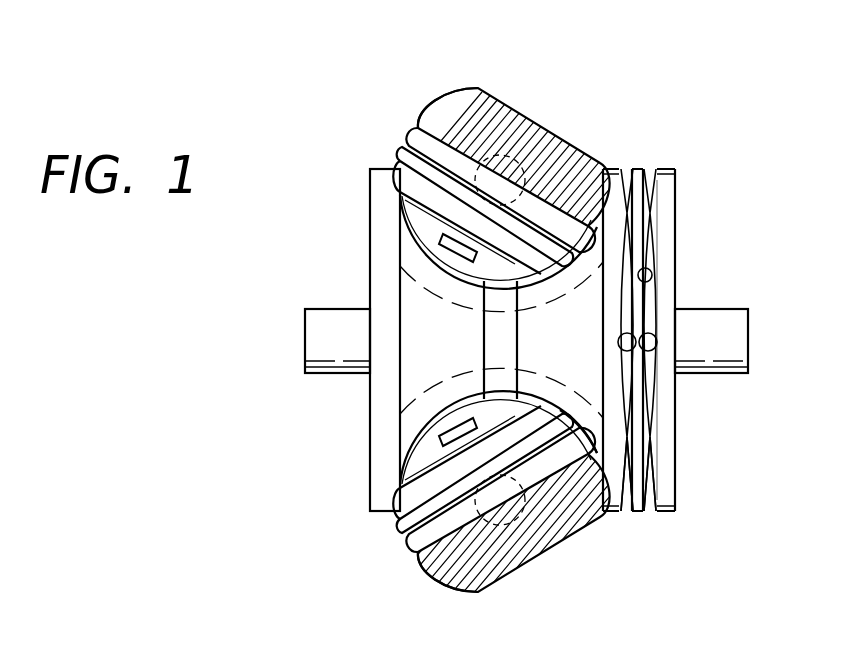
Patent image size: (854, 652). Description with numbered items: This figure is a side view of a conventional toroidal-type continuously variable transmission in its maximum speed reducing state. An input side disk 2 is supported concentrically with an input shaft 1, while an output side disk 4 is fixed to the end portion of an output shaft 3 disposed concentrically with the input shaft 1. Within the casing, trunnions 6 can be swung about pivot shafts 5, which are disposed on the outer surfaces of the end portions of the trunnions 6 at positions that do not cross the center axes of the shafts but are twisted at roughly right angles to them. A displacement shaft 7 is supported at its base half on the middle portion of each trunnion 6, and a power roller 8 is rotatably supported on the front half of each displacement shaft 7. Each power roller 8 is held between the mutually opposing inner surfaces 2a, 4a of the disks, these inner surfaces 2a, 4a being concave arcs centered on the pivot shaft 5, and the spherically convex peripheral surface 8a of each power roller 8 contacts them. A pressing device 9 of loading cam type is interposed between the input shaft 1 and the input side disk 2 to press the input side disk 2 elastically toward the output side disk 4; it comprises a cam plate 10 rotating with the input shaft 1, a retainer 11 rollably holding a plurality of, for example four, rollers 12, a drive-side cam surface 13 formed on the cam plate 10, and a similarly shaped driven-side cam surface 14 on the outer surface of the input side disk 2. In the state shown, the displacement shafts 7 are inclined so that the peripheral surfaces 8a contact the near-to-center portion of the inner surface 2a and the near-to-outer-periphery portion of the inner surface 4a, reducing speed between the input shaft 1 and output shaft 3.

The input shaft 1 is at (738, 350).
The input side disk 2 is at (620, 215).
The inner surface 2a is at (592, 508).
The output shaft 3 is at (305, 345).
The output side disk 4 is at (413, 254).
The inner surface 4a is at (437, 284).
The pivot shaft 5 is at (527, 112).
The trunnion 6 is at (473, 111).
The displacement shaft 7 is at (400, 188).
The power roller 8 is at (415, 131).
The peripheral surface 8a is at (432, 187).
The pressing device 9 is at (690, 332).
The cam plate 10 is at (663, 214).
The retainer 11 is at (636, 169).
The roller 12 is at (627, 172).
The drive-side cam surface 13 is at (652, 274).
The driven-side cam surface 14 is at (630, 417).